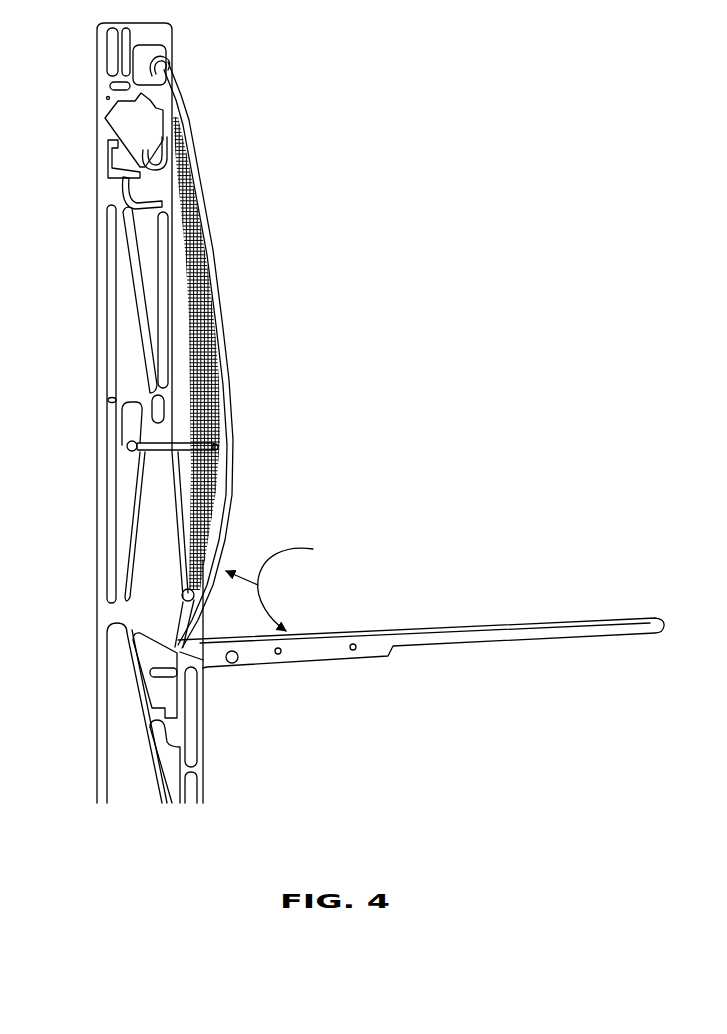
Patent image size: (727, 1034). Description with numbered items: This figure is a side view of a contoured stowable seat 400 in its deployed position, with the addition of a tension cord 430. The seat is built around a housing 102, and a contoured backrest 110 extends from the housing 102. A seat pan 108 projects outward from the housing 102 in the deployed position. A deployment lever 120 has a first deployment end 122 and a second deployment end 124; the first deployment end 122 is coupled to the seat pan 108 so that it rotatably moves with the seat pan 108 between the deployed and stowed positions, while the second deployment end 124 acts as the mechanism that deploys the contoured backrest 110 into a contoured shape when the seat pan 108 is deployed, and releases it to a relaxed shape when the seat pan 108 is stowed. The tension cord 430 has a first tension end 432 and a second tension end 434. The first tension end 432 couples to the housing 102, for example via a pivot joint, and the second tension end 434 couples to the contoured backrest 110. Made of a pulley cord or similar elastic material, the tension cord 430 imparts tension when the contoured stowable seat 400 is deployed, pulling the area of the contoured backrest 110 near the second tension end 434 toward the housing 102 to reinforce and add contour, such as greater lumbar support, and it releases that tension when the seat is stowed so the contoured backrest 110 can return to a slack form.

The contoured stowable seat 400 is at (346, 130).
The housing 102 is at (118, 292).
The contoured backrest 110 is at (228, 318).
The tension cord 430 is at (108, 398).
The first tension end 432 is at (127, 448).
The second tension end 434 is at (218, 445).
The second deployment end 124 is at (181, 596).
The deployment lever 120 is at (289, 583).
The seat pan 108 is at (512, 633).
The first deployment end 122 is at (238, 663).